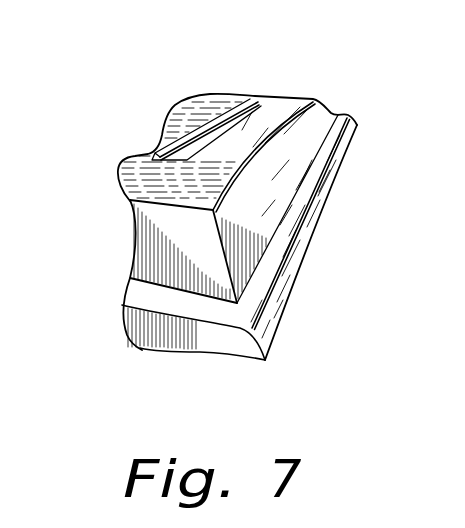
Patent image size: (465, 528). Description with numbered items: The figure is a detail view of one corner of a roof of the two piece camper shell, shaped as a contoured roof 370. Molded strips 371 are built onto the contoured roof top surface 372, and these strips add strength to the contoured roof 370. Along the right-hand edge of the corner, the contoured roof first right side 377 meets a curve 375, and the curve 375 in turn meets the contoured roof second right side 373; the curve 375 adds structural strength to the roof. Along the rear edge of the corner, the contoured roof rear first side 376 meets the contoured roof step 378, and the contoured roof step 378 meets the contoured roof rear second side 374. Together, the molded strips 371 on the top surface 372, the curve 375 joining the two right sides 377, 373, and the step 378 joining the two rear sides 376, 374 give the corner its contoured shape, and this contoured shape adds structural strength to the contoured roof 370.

The contoured roof 370 is at (106, 107).
The molded strips 371 is at (250, 98).
The contoured roof top surface 372 is at (240, 170).
The contoured roof second right side 373 is at (293, 148).
The contoured roof rear second side 374 is at (183, 233).
The curve 375 is at (297, 210).
The contoured roof first right side 377 is at (272, 313).
The contoured roof step 378 is at (166, 301).
The contoured roof rear first side 376 is at (208, 343).